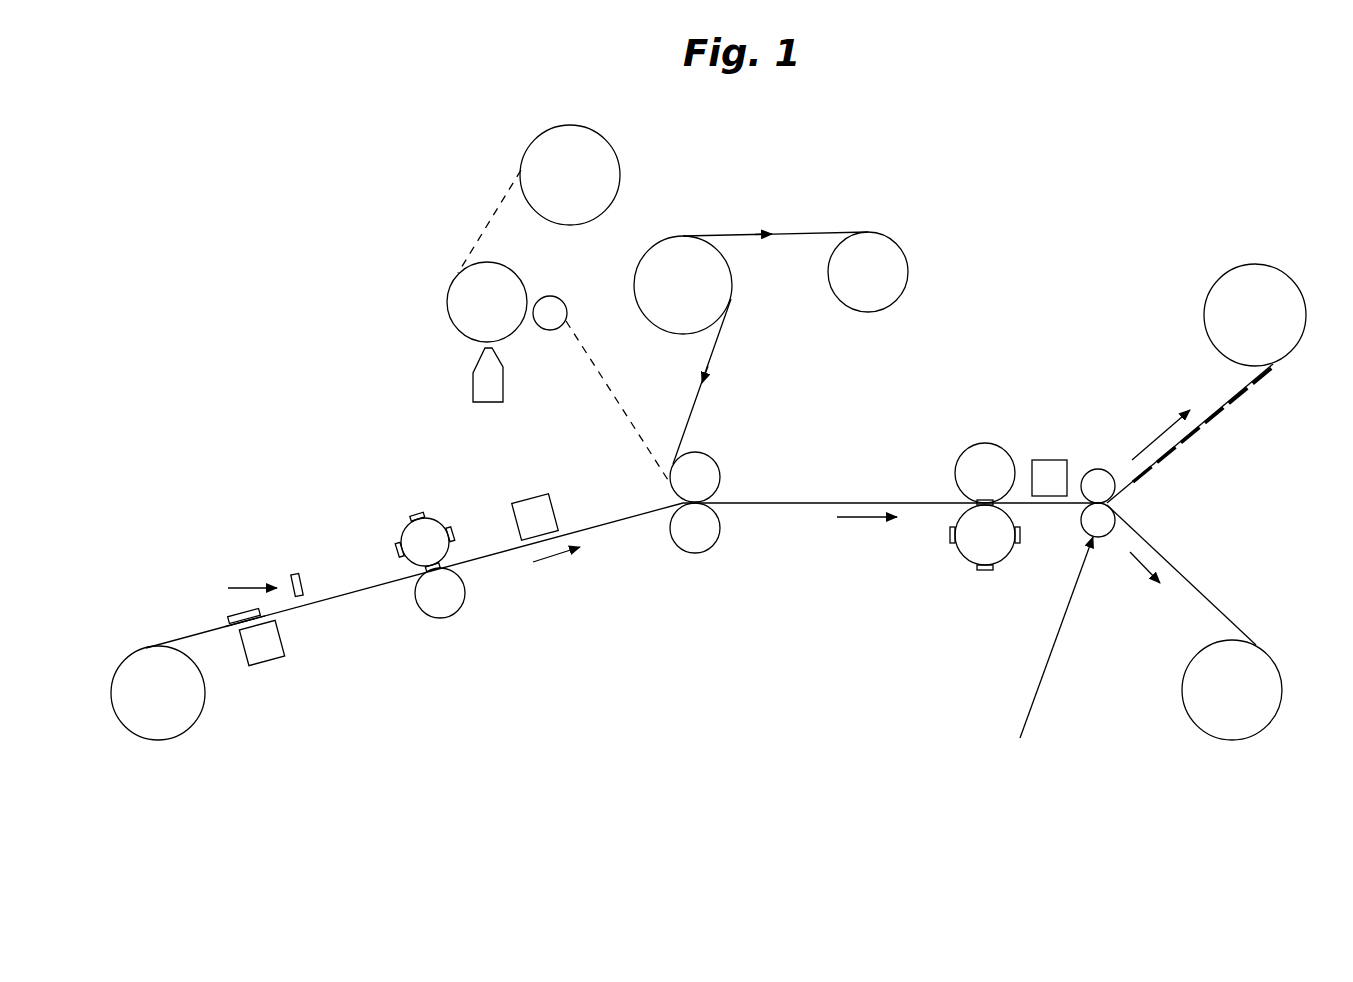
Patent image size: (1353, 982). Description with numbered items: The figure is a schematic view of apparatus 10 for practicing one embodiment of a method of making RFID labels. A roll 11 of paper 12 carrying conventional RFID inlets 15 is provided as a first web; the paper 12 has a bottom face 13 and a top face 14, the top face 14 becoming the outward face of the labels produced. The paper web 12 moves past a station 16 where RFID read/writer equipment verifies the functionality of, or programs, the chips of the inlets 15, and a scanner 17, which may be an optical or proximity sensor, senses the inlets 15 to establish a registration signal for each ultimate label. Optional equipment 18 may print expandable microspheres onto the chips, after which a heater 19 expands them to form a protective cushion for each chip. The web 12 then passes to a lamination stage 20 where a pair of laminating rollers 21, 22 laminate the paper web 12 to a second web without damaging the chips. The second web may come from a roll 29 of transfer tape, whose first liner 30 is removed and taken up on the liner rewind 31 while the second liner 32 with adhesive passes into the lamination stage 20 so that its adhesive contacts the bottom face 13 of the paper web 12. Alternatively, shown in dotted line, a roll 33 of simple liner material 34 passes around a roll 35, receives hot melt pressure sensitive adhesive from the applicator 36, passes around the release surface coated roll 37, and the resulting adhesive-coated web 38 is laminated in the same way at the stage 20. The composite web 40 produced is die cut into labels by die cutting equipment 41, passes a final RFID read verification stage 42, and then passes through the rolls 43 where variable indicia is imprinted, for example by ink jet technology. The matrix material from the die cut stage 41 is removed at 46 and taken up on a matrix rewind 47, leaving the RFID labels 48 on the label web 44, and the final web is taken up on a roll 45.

The web processing system 10 is at (1098, 218).
The roll 11 is at (213, 720).
The paper 12 is at (110, 712).
The bottom face 13 is at (175, 637).
The top face 14 is at (205, 632).
The RFID inlet 15 is at (235, 612).
The station 16 is at (287, 665).
The scanner 17 is at (242, 586).
The equipment 18 is at (475, 580).
The heater 19 is at (523, 483).
The lamination stage 20 is at (695, 520).
The laminating roller 21 is at (720, 468).
The laminating roller 22 is at (720, 537).
The roll of transfer tape 29 is at (733, 290).
The first liner 30 is at (798, 233).
The liner rewind 31 is at (883, 310).
The second liner 32 is at (683, 413).
The roll 33 is at (527, 150).
The liner material 34 is at (483, 228).
The roll 35 is at (513, 267).
The applicator 36 is at (480, 377).
The release surface coated roll 37 is at (555, 330).
The web 38 is at (603, 353).
The composite web 40 is at (852, 503).
The die cutting equipment 41 is at (938, 537).
The final RFID read verification stage 42 is at (1057, 442).
The rolls 43 is at (1020, 738).
The label web 44 is at (1203, 443).
The roll 45 is at (1262, 268).
The matrix material removal 46 is at (1197, 588).
The matrix rewind 47 is at (1248, 708).
The RFID label 48 is at (1218, 420).